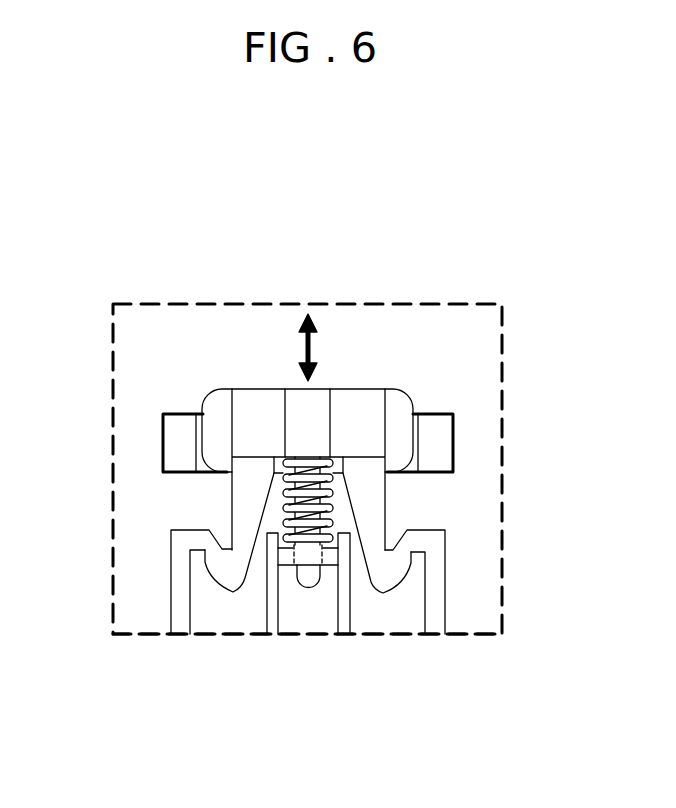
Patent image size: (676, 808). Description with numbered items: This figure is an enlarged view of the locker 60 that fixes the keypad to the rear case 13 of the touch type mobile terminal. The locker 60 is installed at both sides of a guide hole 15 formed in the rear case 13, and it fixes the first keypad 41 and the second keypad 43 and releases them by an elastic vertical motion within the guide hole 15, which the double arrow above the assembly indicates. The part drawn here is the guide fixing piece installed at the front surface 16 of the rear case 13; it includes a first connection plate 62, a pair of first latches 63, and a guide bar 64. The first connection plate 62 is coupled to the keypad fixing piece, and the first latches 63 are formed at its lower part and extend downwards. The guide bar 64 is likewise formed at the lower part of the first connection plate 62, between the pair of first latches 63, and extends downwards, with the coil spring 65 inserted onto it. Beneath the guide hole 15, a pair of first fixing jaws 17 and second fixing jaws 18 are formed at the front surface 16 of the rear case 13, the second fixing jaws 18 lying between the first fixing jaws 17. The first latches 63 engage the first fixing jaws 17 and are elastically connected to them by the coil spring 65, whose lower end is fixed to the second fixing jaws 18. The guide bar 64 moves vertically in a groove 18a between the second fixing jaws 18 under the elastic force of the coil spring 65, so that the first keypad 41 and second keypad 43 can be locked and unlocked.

The rear case 13 is at (457, 345).
The guide hole 15 is at (442, 448).
The front surface 16 is at (480, 598).
The first fixing jaws 17 is at (177, 600).
The second fixing jaws 18 is at (272, 627).
The groove 18a is at (337, 622).
The first keypad 41 is at (175, 428).
The second keypad 43 is at (440, 428).
The locker 60 is at (255, 389).
The first connection plate 62 is at (362, 407).
The first latches 63 is at (235, 582).
The guide bar 64 is at (310, 578).
The coil spring 65 is at (283, 505).